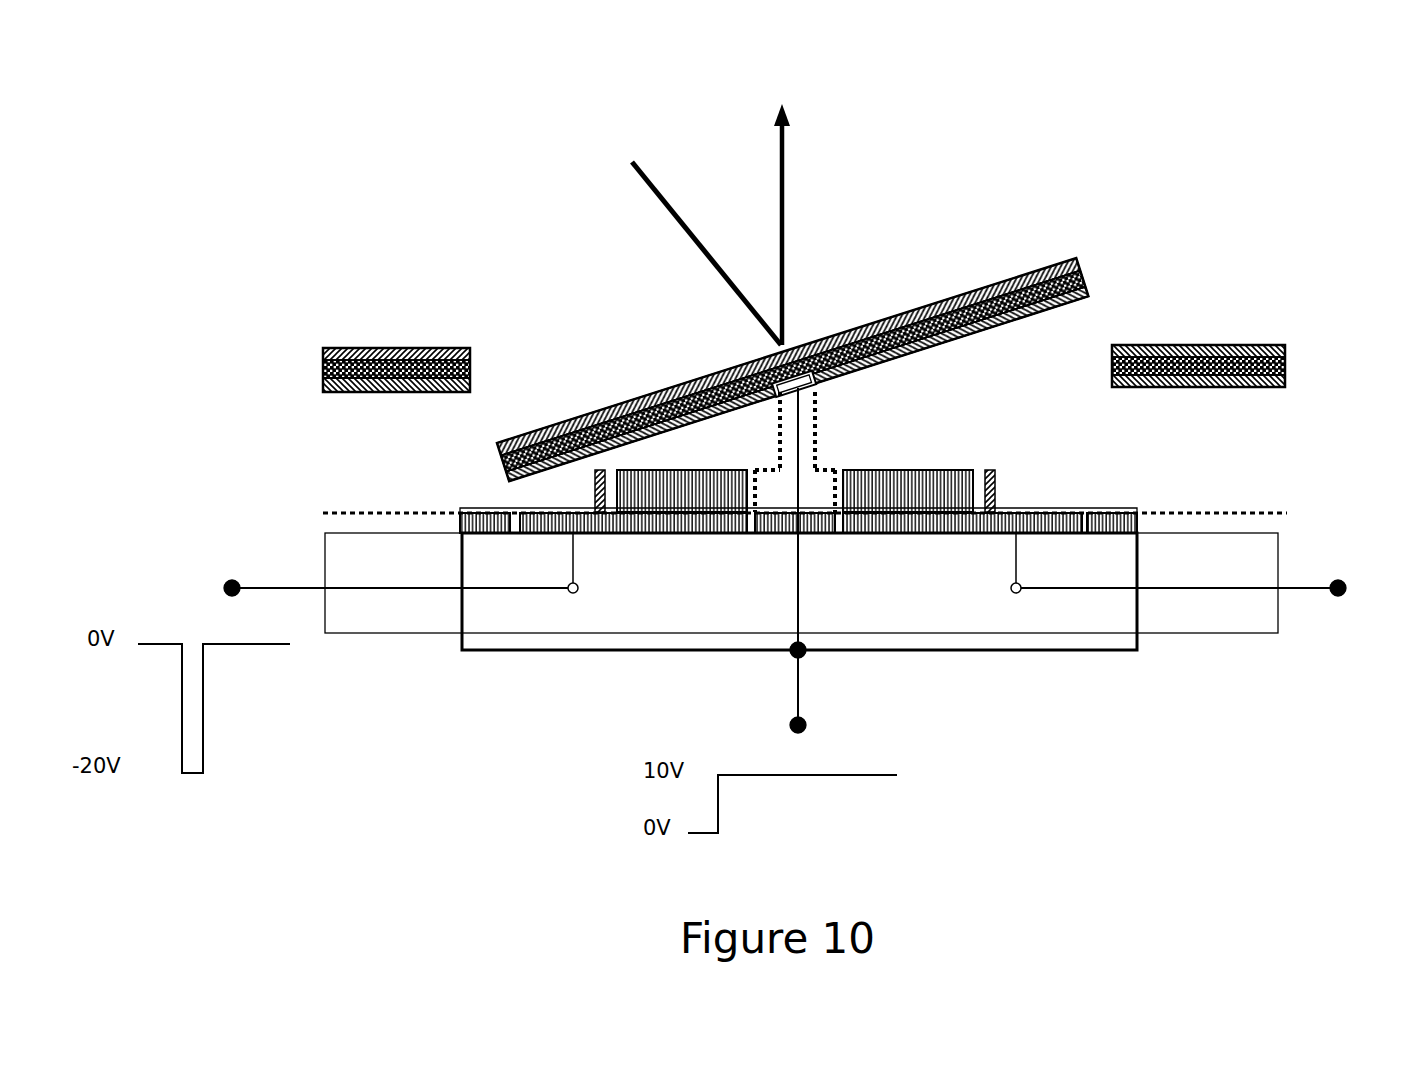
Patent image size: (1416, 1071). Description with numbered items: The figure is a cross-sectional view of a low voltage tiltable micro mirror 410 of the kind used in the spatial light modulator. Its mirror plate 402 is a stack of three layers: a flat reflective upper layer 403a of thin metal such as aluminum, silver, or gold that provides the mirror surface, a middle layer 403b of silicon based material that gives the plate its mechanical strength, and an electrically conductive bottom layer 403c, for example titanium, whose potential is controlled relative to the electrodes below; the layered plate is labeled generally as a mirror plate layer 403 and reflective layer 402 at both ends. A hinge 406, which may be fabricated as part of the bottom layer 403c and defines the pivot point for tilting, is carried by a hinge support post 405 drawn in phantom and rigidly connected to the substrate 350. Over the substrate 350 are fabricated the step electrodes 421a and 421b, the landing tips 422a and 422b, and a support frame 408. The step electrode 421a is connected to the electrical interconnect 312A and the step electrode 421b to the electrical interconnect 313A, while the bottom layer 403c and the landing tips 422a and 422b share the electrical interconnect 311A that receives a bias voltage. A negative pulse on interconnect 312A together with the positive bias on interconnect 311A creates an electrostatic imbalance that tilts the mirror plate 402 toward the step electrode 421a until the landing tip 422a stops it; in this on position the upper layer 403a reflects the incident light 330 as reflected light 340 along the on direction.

The low voltage tiltable micro mirror 410 is at (1099, 121).
The incident light 330 is at (646, 186).
The reflected light 340 is at (796, 147).
The mirror plate 402 is at (350, 335).
The mirror plate layer 403 is at (356, 397).
The flat reflective upper layer 403a is at (684, 383).
The middle layer 403b is at (892, 325).
The bottom layer 403c is at (1020, 310).
The hinge 406 is at (818, 383).
The hinge support post 405 is at (820, 440).
The support frame 408 is at (457, 521).
The step electrode 421a is at (719, 538).
The step electrode 421b is at (871, 538).
The landing tip 422a is at (589, 487).
The landing tip 422b is at (995, 487).
The substrate 350 is at (412, 617).
The electrical interconnect 311A is at (851, 566).
The electrical interconnect 312A is at (361, 564).
The electrical interconnect 313A is at (1210, 564).